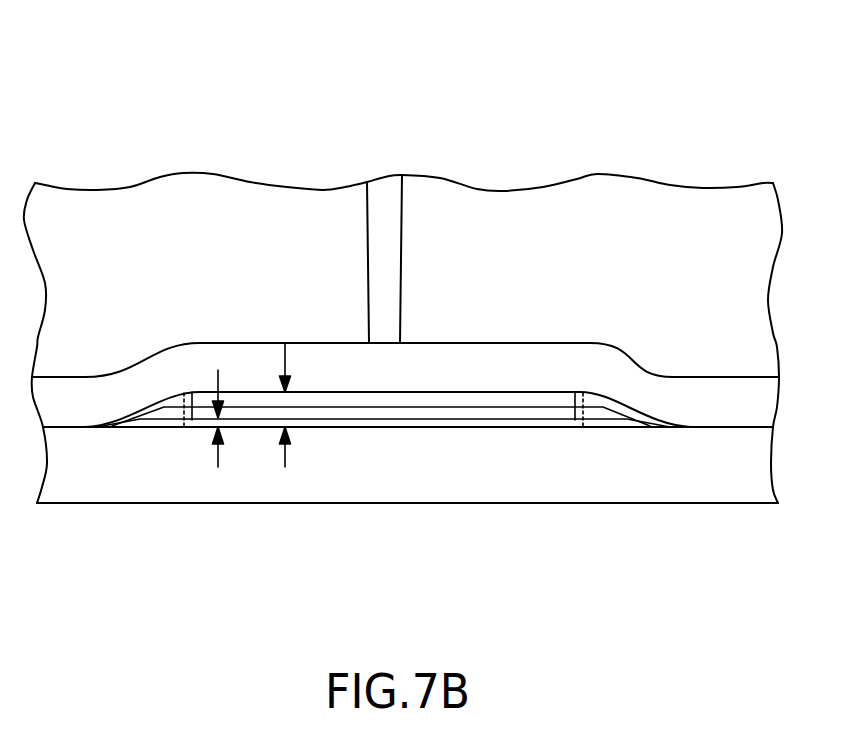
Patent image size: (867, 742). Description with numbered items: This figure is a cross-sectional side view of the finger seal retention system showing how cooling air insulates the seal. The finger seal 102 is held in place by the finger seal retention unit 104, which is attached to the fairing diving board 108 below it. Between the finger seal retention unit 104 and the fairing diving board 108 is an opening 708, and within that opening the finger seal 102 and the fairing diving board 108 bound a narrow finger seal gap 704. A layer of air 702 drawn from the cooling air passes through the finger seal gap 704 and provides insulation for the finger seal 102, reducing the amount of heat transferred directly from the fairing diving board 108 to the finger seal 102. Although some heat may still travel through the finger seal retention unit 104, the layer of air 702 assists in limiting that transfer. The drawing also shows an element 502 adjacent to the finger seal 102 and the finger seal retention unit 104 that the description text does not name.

The finger seal 102 is at (193, 114).
The bonding layer 502 is at (557, 360).
The finger seal retention unit 104 is at (800, 412).
The fairing diving board 108 is at (397, 475).
The layer of air 702 is at (183, 423).
The finger seal gap 704 is at (216, 434).
The opening 708 is at (284, 421).